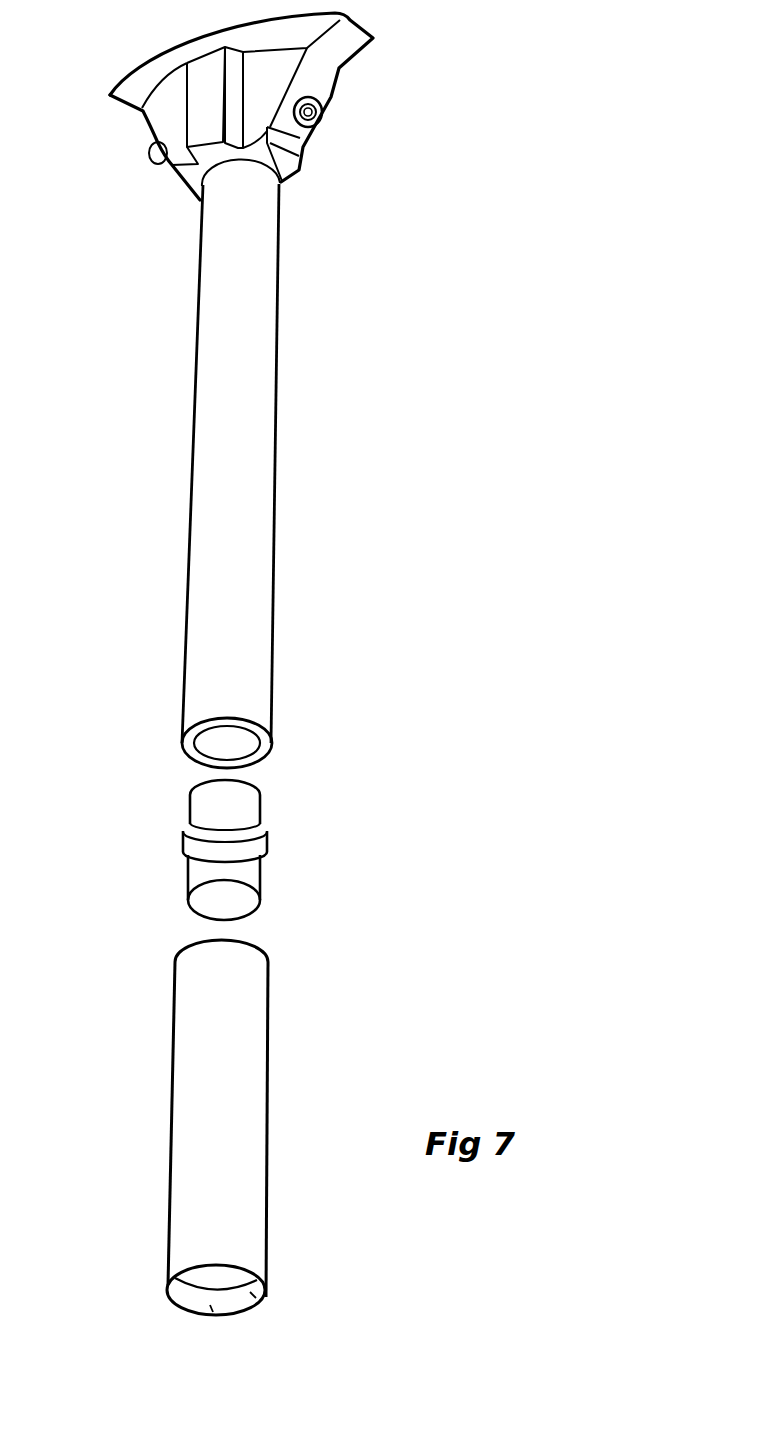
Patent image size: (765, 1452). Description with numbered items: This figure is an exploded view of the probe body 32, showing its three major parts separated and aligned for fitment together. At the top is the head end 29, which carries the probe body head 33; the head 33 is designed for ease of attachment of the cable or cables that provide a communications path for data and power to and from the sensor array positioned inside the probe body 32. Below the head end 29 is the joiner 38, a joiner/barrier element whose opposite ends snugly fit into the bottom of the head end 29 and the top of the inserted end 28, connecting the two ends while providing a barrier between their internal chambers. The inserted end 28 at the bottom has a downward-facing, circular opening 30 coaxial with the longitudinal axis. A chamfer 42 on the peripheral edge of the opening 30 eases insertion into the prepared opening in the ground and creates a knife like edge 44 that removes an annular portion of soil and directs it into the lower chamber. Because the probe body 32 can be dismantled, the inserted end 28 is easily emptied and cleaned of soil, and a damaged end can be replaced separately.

The inserted end 28 is at (219, 1155).
The head end 29 is at (262, 313).
The opening 30 is at (235, 1302).
The probe body 32 is at (287, 426).
The probe body head 33 is at (328, 98).
The joiner 38 is at (247, 816).
The chamfer 42 is at (262, 1300).
The knife like edge 44 is at (183, 1308).